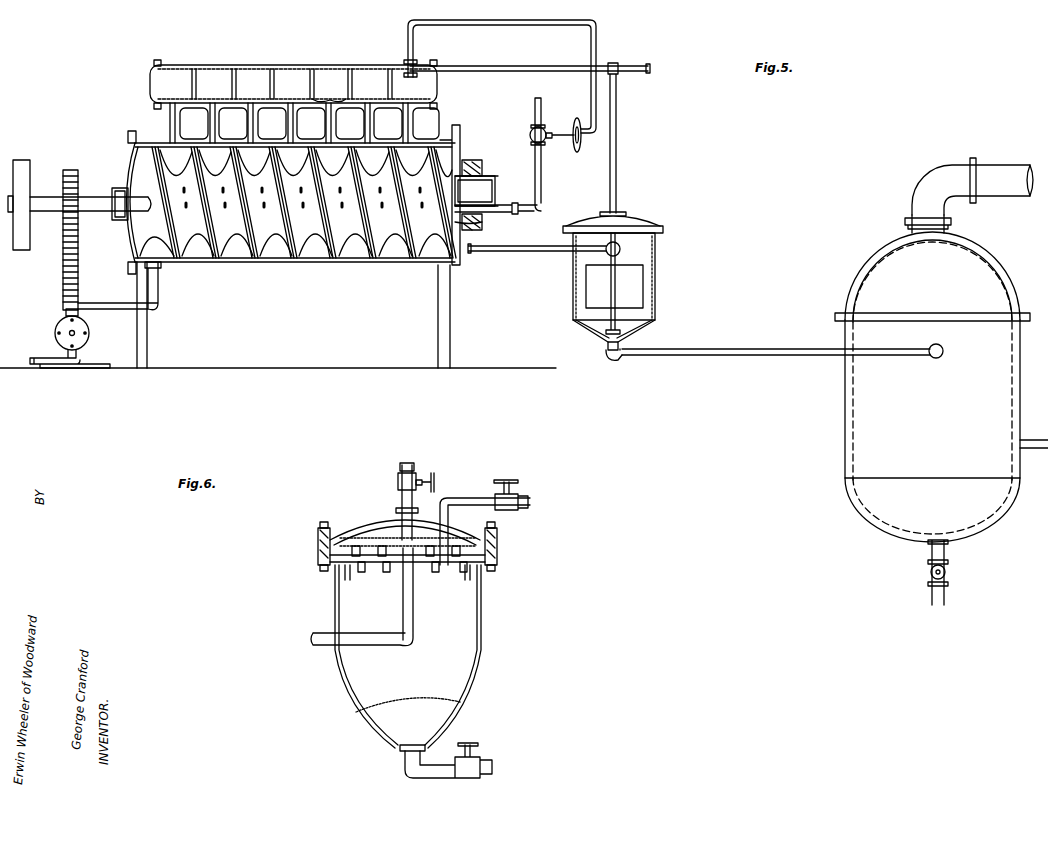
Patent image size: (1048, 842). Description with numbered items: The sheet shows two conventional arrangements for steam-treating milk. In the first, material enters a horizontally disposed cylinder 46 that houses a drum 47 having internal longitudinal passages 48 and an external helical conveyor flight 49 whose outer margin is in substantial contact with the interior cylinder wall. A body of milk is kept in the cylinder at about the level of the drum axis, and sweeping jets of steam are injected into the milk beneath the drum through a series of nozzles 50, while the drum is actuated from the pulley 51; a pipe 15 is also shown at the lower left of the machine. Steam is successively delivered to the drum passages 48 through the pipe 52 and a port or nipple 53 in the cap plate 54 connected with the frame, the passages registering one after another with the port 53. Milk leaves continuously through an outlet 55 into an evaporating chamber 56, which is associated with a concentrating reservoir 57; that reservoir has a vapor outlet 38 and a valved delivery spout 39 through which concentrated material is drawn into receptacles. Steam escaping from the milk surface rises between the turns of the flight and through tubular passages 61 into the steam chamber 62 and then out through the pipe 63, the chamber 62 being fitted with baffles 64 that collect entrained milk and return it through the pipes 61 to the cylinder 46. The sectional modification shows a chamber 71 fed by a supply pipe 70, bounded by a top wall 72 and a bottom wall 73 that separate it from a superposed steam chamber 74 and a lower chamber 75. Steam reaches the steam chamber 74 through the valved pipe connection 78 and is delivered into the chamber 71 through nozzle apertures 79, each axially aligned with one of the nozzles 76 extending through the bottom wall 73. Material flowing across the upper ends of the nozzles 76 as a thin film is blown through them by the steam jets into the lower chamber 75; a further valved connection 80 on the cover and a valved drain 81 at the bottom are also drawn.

In FIG. 5, the drain pipe 15 is at (164, 292).
In FIG. 5, the vapor outlet 38 is at (972, 186).
In FIG. 5, the valved delivery spout 39 is at (946, 594).
In FIG. 5, the cylinder 46 is at (264, 262).
In FIG. 5, the drum 47 is at (303, 262).
In FIG. 5, the internal longitudinal passages 48 is at (484, 162).
In FIG. 5, the external helical conveyor flight 49 is at (230, 262).
In FIG. 5, the nozzles 50 is at (340, 172).
In FIG. 5, the pulley 51 is at (22, 252).
In FIG. 5, the pipe 52 is at (545, 176).
In FIG. 5, the port or nipple 53 is at (505, 212).
In FIG. 5, the cap plate 54 is at (498, 190).
In FIG. 5, the outlet 55 is at (491, 256).
In FIG. 5, the evaporating chamber 56 is at (660, 264).
In FIG. 5, the concentrating reservoir 57 is at (941, 378).
In FIG. 5, the tubular passages 61 is at (178, 132).
In FIG. 5, the steam chamber 62 is at (293, 84).
In FIG. 5, the pipe 63 is at (504, 72).
In FIG. 5, the baffles 64 is at (335, 100).
In FIG. 6, the supply pipe 70 is at (322, 646).
In FIG. 6, the chamber 71 is at (420, 560).
In FIG. 6, the top wall 72 is at (406, 538).
In FIG. 6, the bottom wall 73 is at (392, 574).
In FIG. 6, the steam chamber 74 is at (407, 533).
In FIG. 6, the lower chamber 75 is at (408, 658).
In FIG. 6, the nozzles 76 is at (345, 575).
In FIG. 6, the valved pipe connection 78 is at (392, 494).
In FIG. 6, the nozzles or nozzle apertures 79 is at (405, 532).
In FIG. 6, the outlet pipe with valve 80 is at (452, 532).
In FIG. 6, the drain valve pipe 81 is at (484, 760).